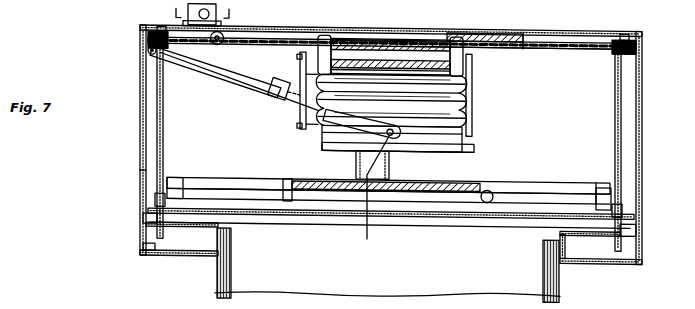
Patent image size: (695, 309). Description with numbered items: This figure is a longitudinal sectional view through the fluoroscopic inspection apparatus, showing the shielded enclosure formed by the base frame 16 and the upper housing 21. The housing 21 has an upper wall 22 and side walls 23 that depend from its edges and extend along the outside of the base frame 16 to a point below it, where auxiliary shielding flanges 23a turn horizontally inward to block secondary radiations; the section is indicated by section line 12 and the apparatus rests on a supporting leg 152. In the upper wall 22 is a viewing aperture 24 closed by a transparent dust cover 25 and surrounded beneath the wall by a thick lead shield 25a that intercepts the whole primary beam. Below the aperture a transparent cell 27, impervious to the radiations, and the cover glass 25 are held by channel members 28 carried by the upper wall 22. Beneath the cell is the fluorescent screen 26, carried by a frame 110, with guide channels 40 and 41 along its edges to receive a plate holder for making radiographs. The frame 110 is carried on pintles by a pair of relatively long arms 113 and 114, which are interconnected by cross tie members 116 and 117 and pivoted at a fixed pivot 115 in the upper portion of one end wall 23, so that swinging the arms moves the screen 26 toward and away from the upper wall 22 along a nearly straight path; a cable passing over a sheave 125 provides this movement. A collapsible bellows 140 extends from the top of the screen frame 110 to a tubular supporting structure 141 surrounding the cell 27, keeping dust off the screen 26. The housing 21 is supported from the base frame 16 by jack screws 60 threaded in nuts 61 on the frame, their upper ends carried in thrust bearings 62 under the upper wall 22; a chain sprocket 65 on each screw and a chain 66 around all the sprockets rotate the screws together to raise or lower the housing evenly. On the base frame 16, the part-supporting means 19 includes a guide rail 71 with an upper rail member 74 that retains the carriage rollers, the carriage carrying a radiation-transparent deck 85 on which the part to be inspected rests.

The section line 12- 12 is at (202, 13).
The base frame 16 is at (180, 227).
The part-supporting means 19 is at (530, 177).
The upper housing 21 is at (140, 138).
The upper wall 22 is at (548, 29).
The side walls 23 is at (140, 176).
The auxiliary shielding flanges 23a is at (160, 257).
The viewing aperture 24 is at (460, 30).
The transparent dust cover 25 is at (395, 40).
The shield 25a is at (512, 44).
The fluorescent screen 26 is at (322, 135).
The transparent cell 27 is at (418, 58).
The channel members 28 is at (330, 36).
The guide channel 40 is at (475, 141).
The guide channel 41 is at (327, 148).
The jack screws 60 is at (164, 100).
The nut 61 is at (143, 212).
The thrust bearings 62 is at (158, 27).
The chain sprocket 65 is at (148, 40).
The chain 66 is at (560, 44).
The guide rail 71 is at (210, 197).
The upper rail member 74 is at (230, 176).
The deck 85 is at (470, 179).
The frame 110 is at (356, 165).
The arm 113 is at (249, 84).
The arm 114 is at (368, 234).
The pivot 115 is at (149, 52).
The cross tie member 116 is at (172, 51).
The cross tie member 117 is at (282, 80).
The sheave 125 is at (222, 43).
The collapsible bellows 140 is at (472, 102).
The tubular supporting structure 141 is at (472, 84).
The leg 152 is at (211, 293).